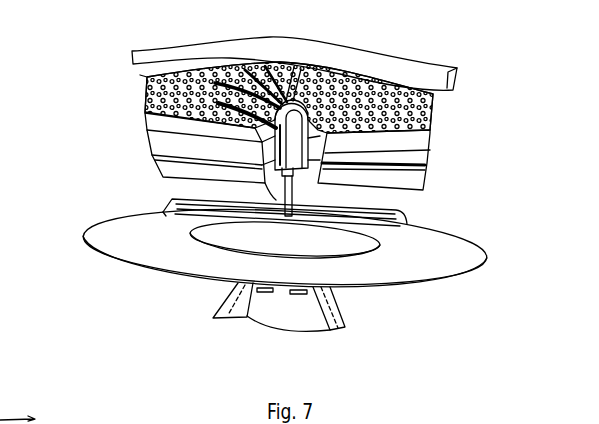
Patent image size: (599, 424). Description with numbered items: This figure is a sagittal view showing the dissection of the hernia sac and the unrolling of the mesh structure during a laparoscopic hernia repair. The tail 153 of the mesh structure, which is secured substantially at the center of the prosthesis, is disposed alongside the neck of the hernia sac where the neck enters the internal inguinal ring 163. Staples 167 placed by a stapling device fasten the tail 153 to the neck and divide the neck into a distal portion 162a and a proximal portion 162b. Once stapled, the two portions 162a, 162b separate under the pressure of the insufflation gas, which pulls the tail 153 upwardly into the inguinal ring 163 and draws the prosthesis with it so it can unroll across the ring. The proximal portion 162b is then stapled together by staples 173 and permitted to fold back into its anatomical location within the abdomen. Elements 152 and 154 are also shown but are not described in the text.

The base disc 152 is at (100, 230).
The tail 153 is at (277, 185).
The inner disc 154 is at (225, 230).
The distal portion of the neck 162a is at (300, 153).
The proximal portion of the neck 162b is at (221, 308).
The internal inguinal ring 163 is at (147, 112).
The staples 167 is at (297, 176).
The staples 173 is at (305, 299).